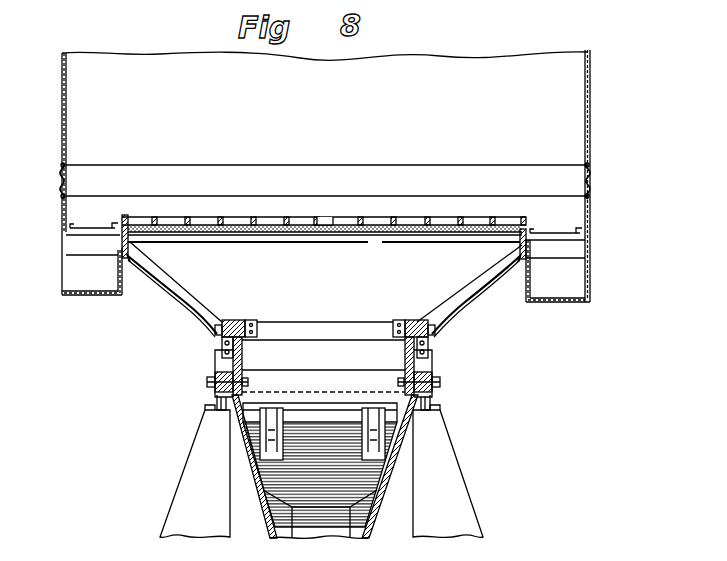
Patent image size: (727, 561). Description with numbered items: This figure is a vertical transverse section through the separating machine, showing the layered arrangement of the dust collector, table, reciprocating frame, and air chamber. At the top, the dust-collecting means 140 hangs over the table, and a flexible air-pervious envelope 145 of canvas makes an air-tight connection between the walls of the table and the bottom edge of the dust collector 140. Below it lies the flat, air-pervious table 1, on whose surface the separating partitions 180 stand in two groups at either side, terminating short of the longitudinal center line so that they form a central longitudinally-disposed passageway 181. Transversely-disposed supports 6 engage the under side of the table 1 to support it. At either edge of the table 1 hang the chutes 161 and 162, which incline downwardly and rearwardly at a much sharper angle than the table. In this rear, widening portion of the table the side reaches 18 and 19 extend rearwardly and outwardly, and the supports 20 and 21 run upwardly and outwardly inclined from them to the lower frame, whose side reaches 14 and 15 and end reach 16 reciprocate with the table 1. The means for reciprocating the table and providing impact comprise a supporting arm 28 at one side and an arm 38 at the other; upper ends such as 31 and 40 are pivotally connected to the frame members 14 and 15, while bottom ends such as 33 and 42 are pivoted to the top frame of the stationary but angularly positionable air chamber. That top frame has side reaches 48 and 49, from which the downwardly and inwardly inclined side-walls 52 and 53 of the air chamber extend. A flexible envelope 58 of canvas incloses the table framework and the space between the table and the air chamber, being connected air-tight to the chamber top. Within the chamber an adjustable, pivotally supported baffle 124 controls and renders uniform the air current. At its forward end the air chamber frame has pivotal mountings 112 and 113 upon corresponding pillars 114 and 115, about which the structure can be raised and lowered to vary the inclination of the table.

The table 1 is at (358, 237).
The transversely-disposed supports 6 is at (315, 240).
The side reach of lower frame 14 is at (233, 320).
The side reach of lower frame 15 is at (415, 320).
The end reach of lower frame 16 is at (336, 328).
The side reach of frame 18 is at (135, 250).
The side reach of frame 19 is at (518, 246).
The support 20 is at (178, 300).
The support 21 is at (468, 300).
The supporting arm 28 is at (244, 360).
The upper end of supporting arm 31 is at (258, 325).
The bottom end of supporting arm 33 is at (250, 382).
The arm 38 is at (404, 362).
The upper end of arm 40 is at (400, 320).
The bottom end of arm 42 is at (398, 381).
The side reach of air chamber top frame 48 is at (222, 368).
The side reach of air chamber top frame 49 is at (430, 370).
The side-wall of air chamber 52 is at (258, 492).
The side-wall of air chamber 53 is at (393, 472).
The flexible envelope 58 is at (158, 286).
The pivotal mounting 112 is at (217, 402).
The pivotal mounting 113 is at (431, 405).
The pillar 114 is at (203, 449).
The pillar 115 is at (438, 449).
The baffle 124 is at (327, 517).
The dust-collecting means 140 is at (593, 118).
The flexible air-pervious envelope 145 is at (592, 185).
The chute 161 is at (75, 269).
The chute 162 is at (573, 273).
The separating partitions 180 is at (224, 223).
The central longitudinally-disposed passageway 181 is at (322, 222).